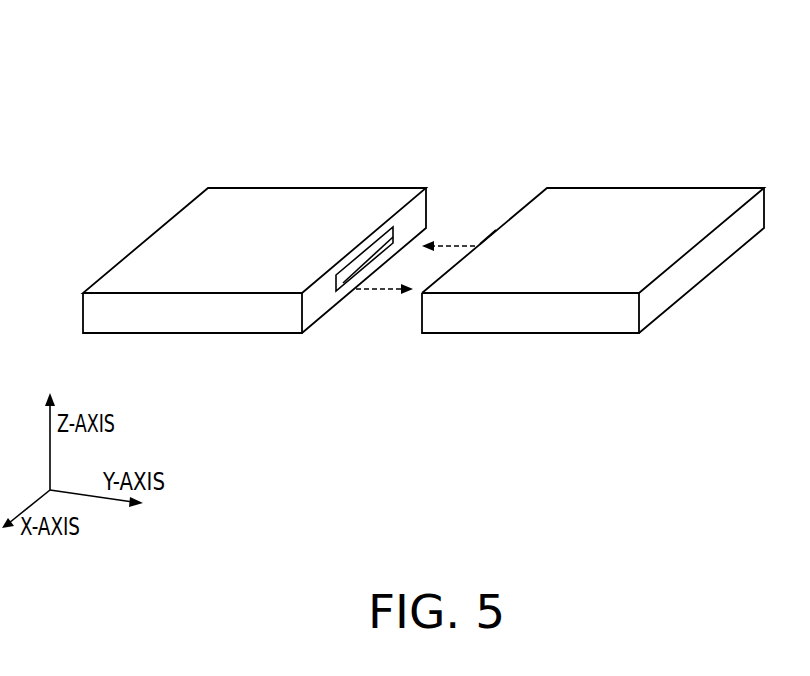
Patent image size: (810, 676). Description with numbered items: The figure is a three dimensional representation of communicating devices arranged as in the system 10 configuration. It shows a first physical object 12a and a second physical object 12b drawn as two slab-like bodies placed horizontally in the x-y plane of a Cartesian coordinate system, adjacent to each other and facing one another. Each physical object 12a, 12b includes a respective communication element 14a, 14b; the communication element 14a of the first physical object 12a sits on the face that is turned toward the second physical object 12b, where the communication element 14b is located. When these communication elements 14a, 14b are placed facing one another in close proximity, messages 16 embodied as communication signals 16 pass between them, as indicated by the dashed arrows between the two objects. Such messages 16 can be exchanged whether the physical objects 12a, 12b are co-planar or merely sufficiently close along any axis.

The system 10 is at (255, 97).
The first physical object 12a is at (355, 187).
The second physical object 12b is at (692, 188).
The communication element 14a is at (346, 277).
The communication element 14b is at (488, 237).
The messages 16 is at (381, 308).